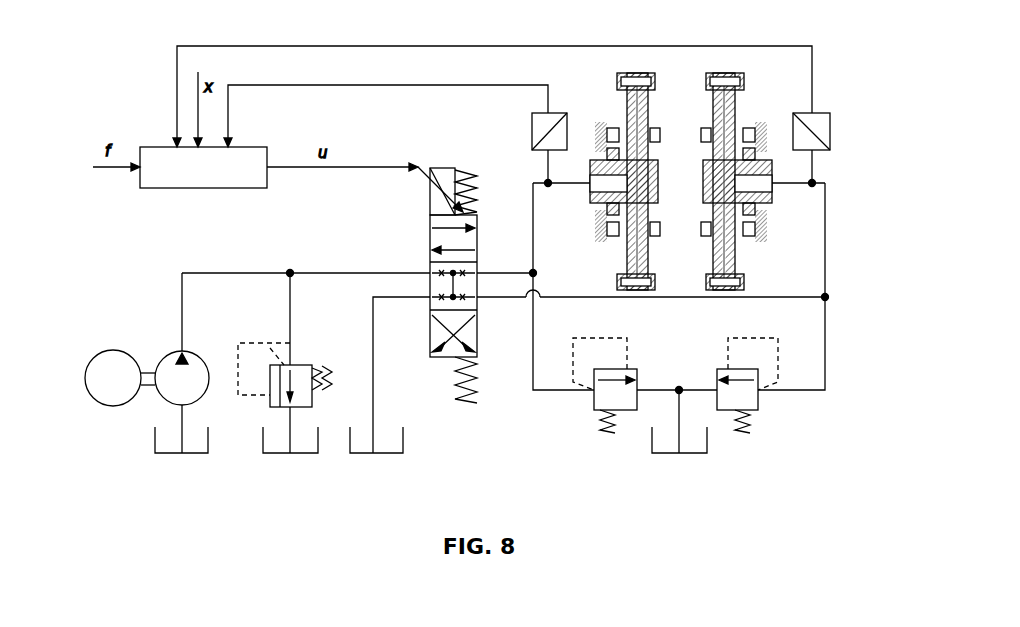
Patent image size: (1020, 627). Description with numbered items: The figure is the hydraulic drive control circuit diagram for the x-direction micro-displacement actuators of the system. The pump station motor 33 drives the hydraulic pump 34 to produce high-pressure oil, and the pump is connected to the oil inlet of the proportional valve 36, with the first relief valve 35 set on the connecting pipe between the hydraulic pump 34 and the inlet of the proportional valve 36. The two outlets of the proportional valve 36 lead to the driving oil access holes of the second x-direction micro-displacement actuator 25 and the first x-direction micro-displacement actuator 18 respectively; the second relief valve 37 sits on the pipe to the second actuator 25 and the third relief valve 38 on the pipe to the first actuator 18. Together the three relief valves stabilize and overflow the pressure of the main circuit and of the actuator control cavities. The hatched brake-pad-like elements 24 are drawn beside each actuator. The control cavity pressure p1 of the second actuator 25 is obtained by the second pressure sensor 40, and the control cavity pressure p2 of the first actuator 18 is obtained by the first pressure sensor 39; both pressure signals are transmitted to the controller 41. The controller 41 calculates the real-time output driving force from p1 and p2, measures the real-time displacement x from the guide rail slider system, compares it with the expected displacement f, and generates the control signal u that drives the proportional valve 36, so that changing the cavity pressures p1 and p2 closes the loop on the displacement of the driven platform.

The first x-direction micro-displacement actuator 18 is at (730, 252).
The brake pad 24 is at (597, 207).
The second x-direction micro-displacement actuator 25 is at (627, 240).
The pump station motor 33 is at (128, 393).
The hydraulic pump 34 is at (198, 388).
The first relief valve 35 is at (307, 393).
The proportional valve 36 is at (473, 333).
The second relief valve 37 is at (608, 393).
The third relief valve 38 is at (747, 393).
The first pressure sensor 39 is at (823, 128).
The second pressure sensor 40 is at (532, 128).
The controller 41 is at (225, 182).